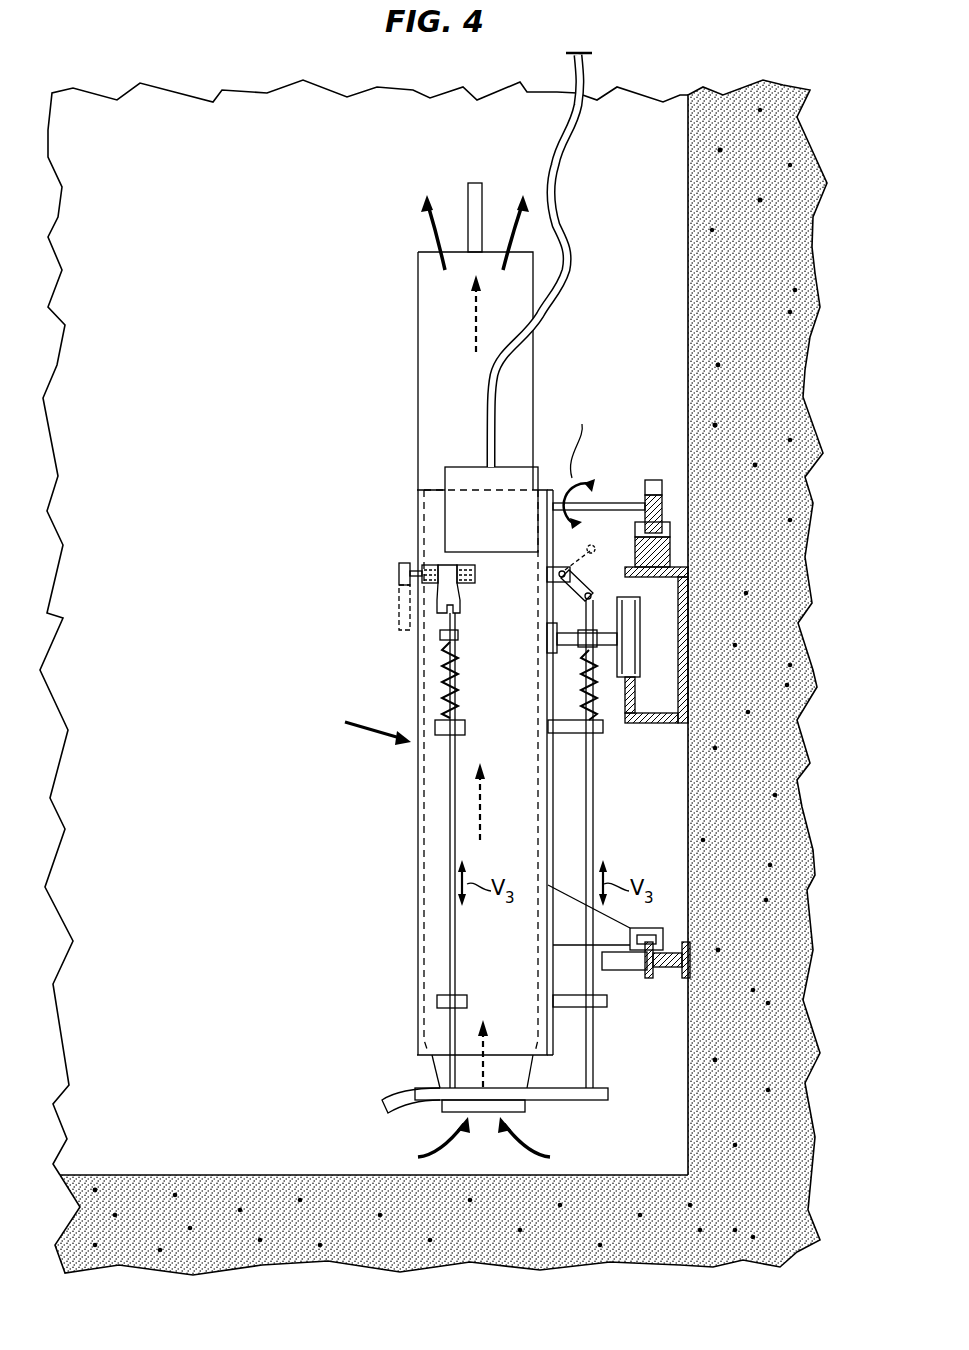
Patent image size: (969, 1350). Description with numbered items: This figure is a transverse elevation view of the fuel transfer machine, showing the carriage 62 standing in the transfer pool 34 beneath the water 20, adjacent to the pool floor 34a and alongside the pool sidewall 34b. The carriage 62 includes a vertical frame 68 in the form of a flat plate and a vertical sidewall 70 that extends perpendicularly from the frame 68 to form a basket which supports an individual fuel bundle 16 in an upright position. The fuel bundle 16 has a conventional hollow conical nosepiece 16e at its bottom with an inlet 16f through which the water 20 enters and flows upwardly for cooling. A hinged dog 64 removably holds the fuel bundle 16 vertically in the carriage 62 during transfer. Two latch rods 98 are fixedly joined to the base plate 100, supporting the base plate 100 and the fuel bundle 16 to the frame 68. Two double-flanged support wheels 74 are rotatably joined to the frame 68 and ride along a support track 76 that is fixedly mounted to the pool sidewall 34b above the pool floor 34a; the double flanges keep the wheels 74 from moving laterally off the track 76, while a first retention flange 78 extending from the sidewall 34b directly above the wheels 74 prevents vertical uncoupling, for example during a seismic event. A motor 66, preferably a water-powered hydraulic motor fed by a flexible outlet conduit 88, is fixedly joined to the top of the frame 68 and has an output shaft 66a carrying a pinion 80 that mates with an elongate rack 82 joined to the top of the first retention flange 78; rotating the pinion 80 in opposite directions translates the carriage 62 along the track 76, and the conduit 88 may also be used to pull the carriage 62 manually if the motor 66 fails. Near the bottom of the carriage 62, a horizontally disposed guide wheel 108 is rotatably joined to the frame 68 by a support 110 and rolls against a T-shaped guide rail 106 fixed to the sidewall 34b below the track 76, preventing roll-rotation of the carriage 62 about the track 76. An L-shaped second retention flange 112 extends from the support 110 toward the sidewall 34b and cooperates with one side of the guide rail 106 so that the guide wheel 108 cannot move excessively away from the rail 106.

The fuel bundle 16 is at (417, 365).
The nosepiece 16e is at (432, 1073).
The inlet 16f is at (517, 1112).
The water 20 is at (442, 1147).
The transfer pool 34 is at (205, 734).
The pool floor 34a is at (225, 1175).
The pool sidewall 34b is at (684, 808).
The carriage 62 is at (362, 728).
The dog 64 is at (398, 573).
The motor 66 is at (547, 488).
The output shaft 66a is at (603, 503).
The frame 68 is at (551, 803).
The sidewall 70 is at (418, 950).
The support wheels 74 is at (643, 635).
The support track 76 is at (645, 722).
The first retention flange 78 is at (686, 560).
The pinion 80 is at (658, 496).
The rack 82 is at (670, 535).
The outlet conduit 88 is at (562, 152).
The latch rods 98 is at (594, 834).
The base plate 100 is at (598, 1100).
The guide rail 106 is at (665, 978).
The guide wheel 108 is at (625, 975).
The support 110 is at (663, 915).
The second retention flange 112 is at (657, 922).